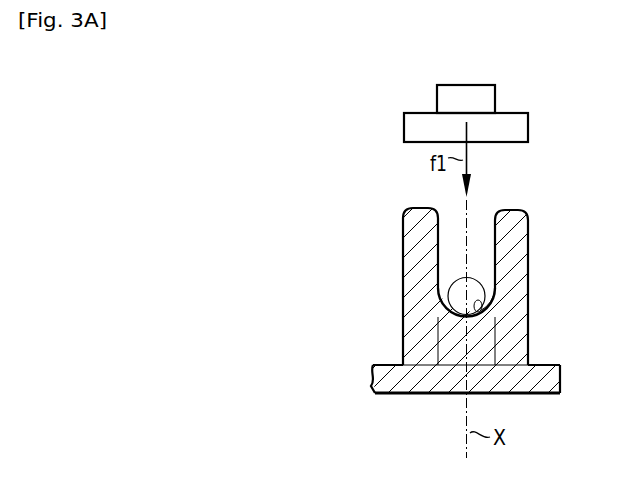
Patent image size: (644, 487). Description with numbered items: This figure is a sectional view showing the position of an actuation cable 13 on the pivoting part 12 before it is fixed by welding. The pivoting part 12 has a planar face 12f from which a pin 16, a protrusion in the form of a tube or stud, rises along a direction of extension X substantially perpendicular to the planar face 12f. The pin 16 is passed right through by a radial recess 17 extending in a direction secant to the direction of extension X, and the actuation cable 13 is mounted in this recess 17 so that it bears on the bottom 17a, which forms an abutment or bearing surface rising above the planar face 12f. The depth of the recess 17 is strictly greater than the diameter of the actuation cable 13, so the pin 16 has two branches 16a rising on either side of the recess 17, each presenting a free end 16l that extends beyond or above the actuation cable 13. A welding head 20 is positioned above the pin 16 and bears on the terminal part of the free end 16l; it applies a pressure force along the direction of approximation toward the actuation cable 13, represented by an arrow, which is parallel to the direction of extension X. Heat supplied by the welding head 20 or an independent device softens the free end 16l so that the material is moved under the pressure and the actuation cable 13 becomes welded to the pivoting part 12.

The pivoting part 12 is at (412, 325).
The planar face 12f is at (549, 359).
The actuation cable 13 is at (447, 313).
The pin 16 is at (412, 296).
The branches 16a is at (410, 268).
The free end 16l is at (513, 227).
The recess 17 is at (450, 264).
The bottom 17a is at (494, 304).
The welding head 20 is at (520, 124).